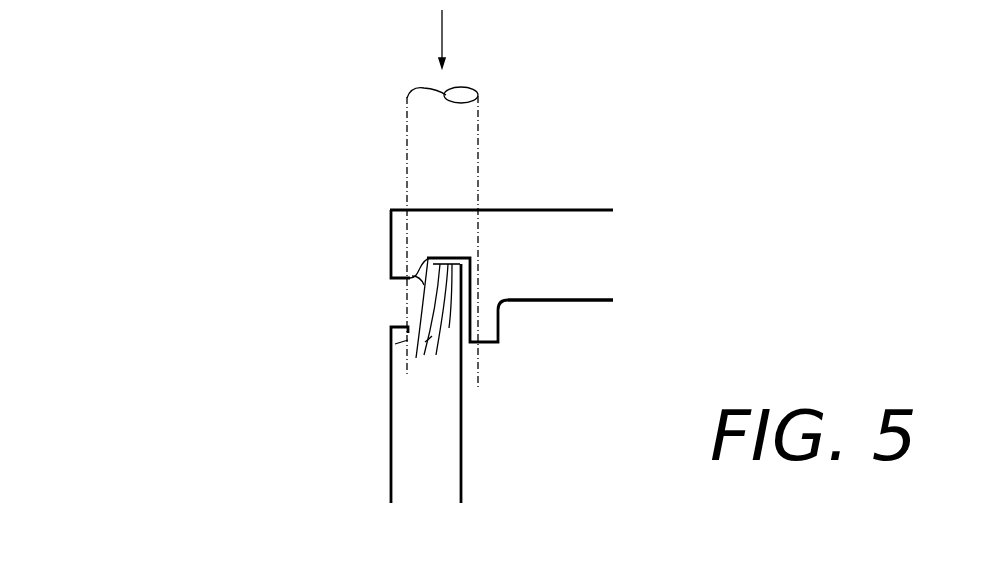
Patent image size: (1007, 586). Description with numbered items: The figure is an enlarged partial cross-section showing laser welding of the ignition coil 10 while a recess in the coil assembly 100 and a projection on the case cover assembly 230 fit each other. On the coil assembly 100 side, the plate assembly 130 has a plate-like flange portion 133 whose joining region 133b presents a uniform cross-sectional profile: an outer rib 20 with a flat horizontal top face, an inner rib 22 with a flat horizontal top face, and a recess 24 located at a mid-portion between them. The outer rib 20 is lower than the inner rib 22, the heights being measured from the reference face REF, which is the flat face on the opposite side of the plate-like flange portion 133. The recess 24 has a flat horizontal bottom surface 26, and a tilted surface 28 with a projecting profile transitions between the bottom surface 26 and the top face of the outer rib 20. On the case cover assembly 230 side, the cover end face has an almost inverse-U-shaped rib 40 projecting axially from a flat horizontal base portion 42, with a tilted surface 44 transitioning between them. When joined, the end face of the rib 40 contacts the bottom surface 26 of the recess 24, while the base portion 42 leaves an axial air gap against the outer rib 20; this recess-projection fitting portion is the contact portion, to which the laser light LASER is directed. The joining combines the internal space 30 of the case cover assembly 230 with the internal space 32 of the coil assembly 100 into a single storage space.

The ignition coil 10 is at (733, 236).
The outer rib 20 is at (388, 260).
The inner rib 22 is at (489, 327).
The recess 24 is at (449, 328).
The bottom surface 26 is at (425, 299).
The tilted surface 28 is at (420, 285).
The internal space 30 is at (522, 477).
The internal space 32 is at (585, 322).
The rib 40 is at (433, 360).
The base portion 42 is at (395, 344).
The tilted surface 44 is at (425, 342).
The coil assembly 100 is at (120, 304).
The plate assembly 130 is at (229, 253).
The plate-like flange portion 133 is at (237, 230).
The joining region 133b is at (322, 220).
The case cover assembly 230 is at (219, 444).
The reference face REF is at (399, 209).
The laser light LASER is at (468, 132).